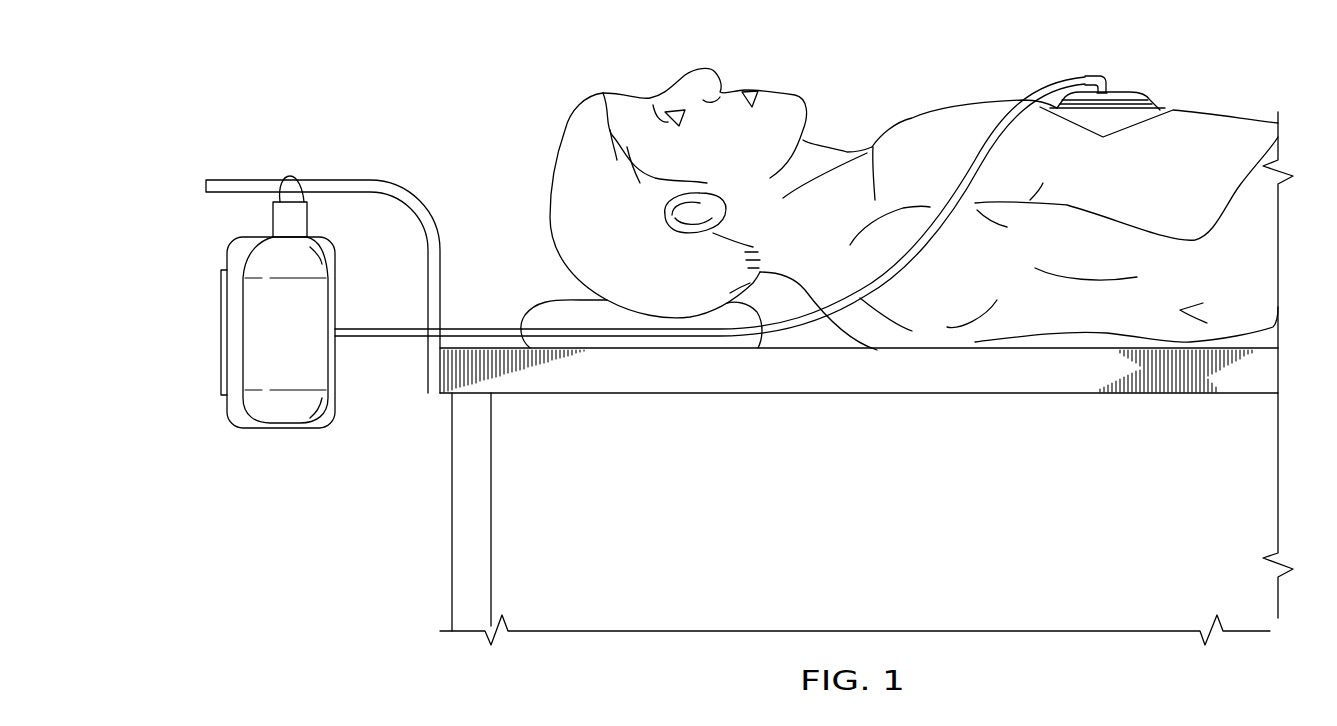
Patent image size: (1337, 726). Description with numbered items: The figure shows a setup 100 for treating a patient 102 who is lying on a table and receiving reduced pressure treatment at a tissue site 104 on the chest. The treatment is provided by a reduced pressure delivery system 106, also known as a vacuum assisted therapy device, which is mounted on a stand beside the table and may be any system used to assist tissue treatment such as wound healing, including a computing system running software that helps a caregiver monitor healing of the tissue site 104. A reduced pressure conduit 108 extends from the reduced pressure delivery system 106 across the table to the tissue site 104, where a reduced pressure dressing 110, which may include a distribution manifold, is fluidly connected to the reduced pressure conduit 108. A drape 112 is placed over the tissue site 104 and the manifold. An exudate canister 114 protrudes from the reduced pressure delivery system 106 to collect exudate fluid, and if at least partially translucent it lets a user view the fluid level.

The setup 100 is at (603, 50).
The patient 102 is at (937, 107).
The tissue site 104 is at (1153, 58).
The reduced pressure delivery system 106 is at (334, 438).
The reduced pressure conduit 108 is at (395, 328).
The reduced pressure dressing 110 is at (1093, 73).
The drape 112 is at (1127, 127).
The exudate canister 114 is at (249, 411).